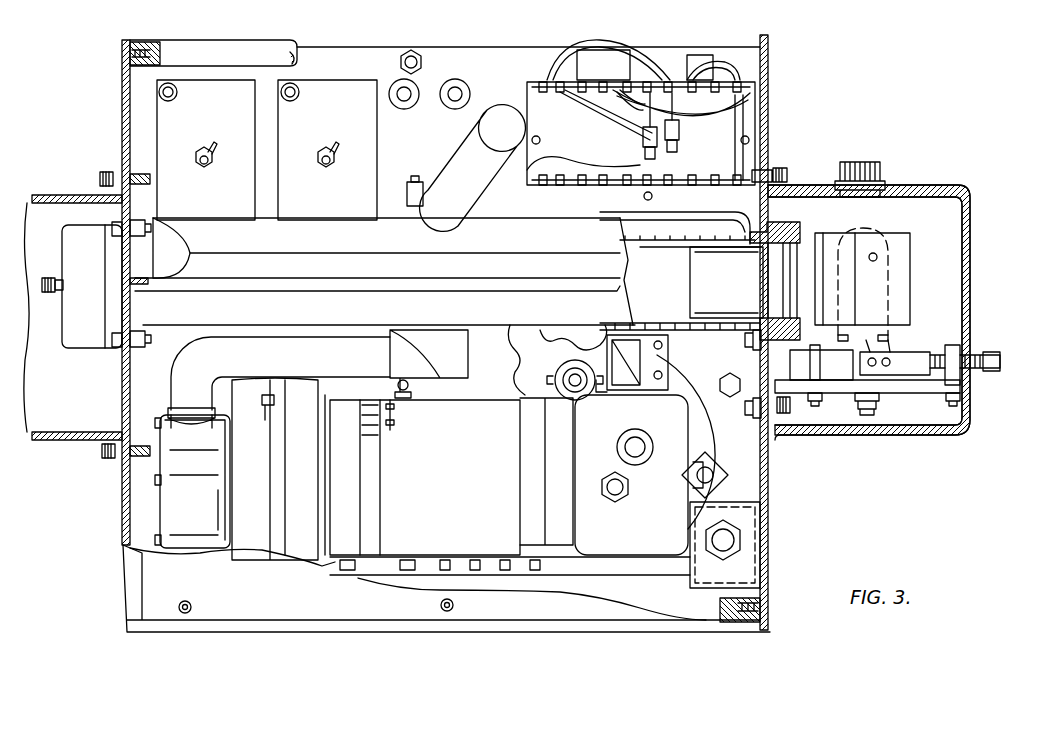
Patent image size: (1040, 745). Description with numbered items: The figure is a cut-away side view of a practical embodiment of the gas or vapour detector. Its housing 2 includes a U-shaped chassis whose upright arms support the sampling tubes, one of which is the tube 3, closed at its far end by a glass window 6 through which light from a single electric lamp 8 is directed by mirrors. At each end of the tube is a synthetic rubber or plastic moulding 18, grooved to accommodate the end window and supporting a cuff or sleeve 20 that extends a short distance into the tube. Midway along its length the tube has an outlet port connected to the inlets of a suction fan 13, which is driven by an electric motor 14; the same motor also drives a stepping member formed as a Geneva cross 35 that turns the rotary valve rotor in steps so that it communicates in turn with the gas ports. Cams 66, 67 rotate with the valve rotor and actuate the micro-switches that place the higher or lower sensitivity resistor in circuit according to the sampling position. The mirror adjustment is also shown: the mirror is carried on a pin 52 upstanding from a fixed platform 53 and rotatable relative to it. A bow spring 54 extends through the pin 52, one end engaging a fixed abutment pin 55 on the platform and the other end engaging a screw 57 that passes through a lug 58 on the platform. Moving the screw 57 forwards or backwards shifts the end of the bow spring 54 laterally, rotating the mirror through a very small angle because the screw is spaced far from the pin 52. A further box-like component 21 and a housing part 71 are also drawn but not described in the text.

The housing 2 is at (577, 612).
The tube 3 is at (733, 320).
The glass window 6 is at (785, 278).
The electric lamp 8 is at (875, 232).
The suction fan 13 is at (205, 526).
The electric motor 14 is at (402, 524).
The moulding 18 is at (790, 232).
The cuff or sleeve 20 is at (690, 300).
The junction box 21 is at (768, 522).
The Geneva cross 35 is at (523, 392).
The pin 52 is at (873, 336).
The fixed platform 53 is at (913, 385).
The bow spring 54 is at (920, 355).
The fixed abutment pin 55 is at (818, 358).
The screw 57 is at (985, 355).
The lug 58 is at (952, 348).
The cam 66 is at (612, 390).
The cam 67 is at (596, 390).
The pump housing 71 is at (905, 265).